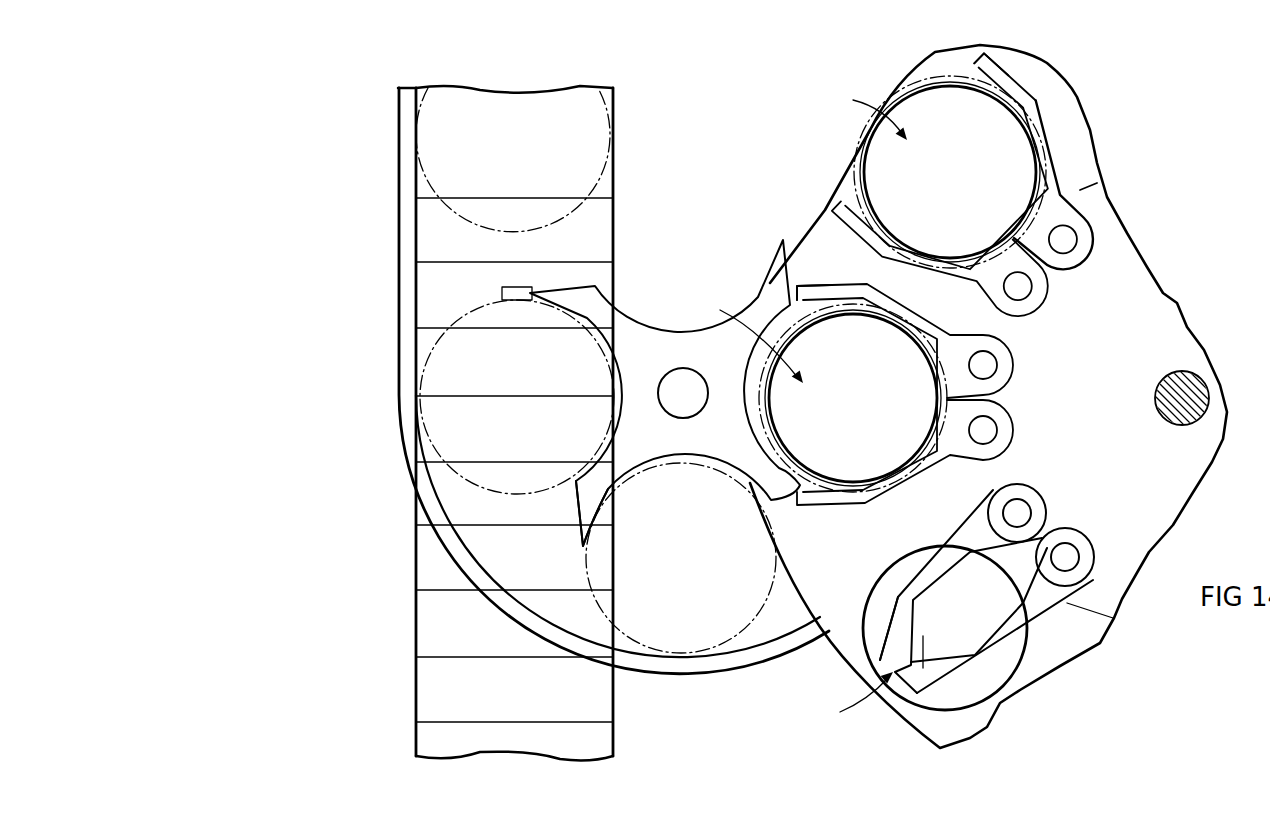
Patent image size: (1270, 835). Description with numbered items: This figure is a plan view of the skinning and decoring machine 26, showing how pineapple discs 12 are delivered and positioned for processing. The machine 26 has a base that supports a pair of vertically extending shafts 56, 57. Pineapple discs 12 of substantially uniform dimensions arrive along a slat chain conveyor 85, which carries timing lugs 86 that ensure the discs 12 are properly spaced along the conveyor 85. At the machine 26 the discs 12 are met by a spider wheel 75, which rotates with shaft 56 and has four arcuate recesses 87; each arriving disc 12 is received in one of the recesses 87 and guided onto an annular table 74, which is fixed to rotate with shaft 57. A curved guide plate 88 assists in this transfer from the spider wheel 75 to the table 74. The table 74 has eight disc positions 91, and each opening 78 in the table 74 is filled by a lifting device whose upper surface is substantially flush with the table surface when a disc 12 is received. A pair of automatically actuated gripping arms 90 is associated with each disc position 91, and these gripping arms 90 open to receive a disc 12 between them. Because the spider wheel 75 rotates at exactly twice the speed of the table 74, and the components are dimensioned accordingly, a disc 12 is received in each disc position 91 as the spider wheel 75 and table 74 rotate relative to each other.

The pineapple discs 12 is at (600, 188).
The skinning and decoring machine 26 is at (1162, 240).
The shaft 56 is at (678, 385).
The shaft 57 is at (1196, 388).
The annular table 74 is at (1050, 652).
The spider wheel 75 is at (625, 460).
The opening 78 is at (800, 345).
The slat chain conveyor 85 is at (600, 229).
The timing lugs 86 is at (513, 291).
The arcuate recesses 87 is at (663, 318).
The curved guide plate 88 is at (667, 672).
The gripping arms 90 is at (993, 70).
The disc position 91 is at (802, 409).